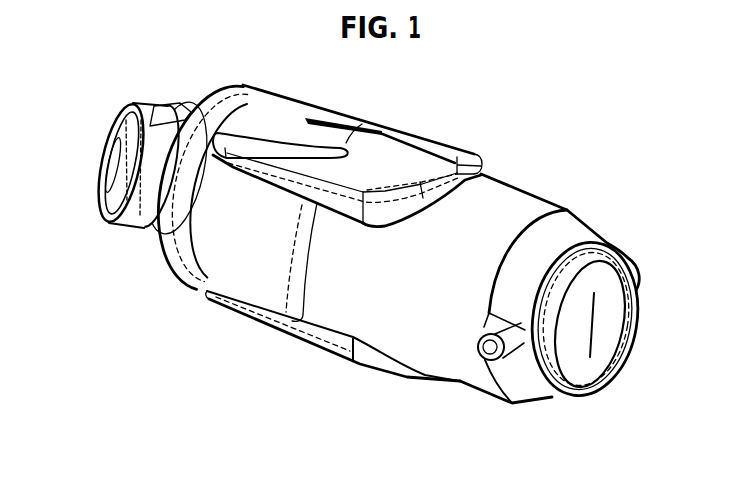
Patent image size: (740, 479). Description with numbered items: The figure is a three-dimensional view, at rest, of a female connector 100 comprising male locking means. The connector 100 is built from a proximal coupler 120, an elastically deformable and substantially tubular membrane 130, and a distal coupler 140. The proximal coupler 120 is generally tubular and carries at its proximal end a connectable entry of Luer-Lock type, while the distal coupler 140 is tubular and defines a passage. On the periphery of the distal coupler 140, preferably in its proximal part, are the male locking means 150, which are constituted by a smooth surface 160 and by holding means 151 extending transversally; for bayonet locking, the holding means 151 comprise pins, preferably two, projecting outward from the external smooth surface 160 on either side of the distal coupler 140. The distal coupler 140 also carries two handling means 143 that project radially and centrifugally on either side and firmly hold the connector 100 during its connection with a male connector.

The female connector 100 is at (560, 148).
The proximal coupler 120 is at (128, 178).
The elastically deformable membrane 130 is at (571, 349).
The distal coupler 140 is at (368, 279).
The handling means 143 is at (406, 142).
The male locking means 150 is at (461, 350).
The holding means 151 is at (510, 372).
The smooth surface 160 is at (495, 203).